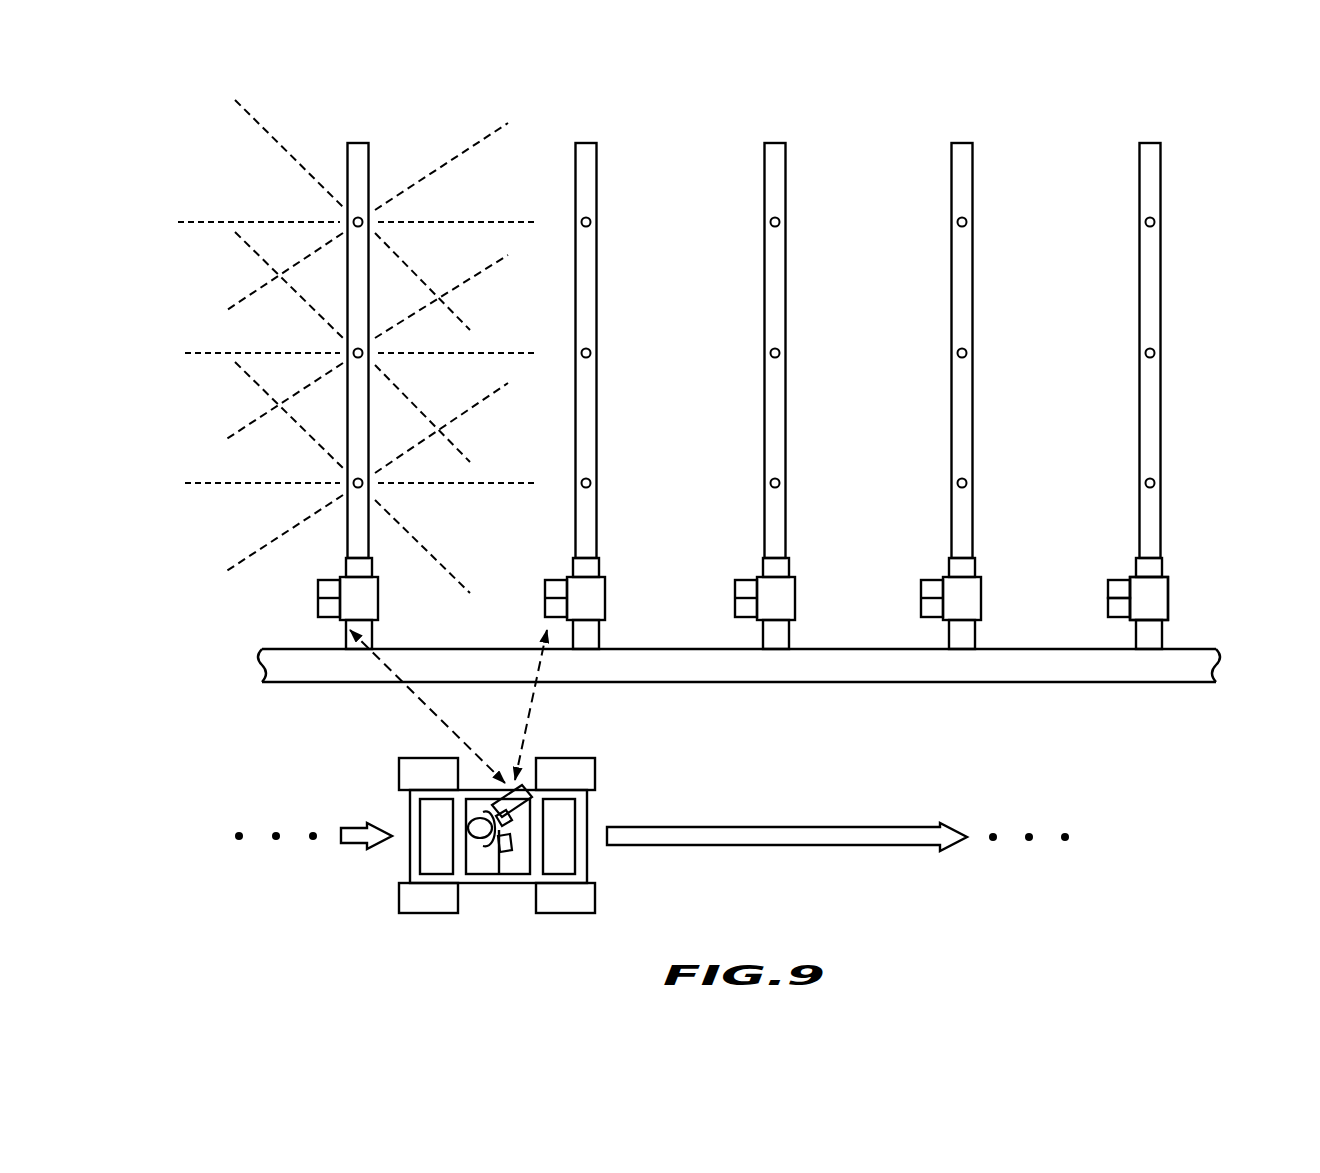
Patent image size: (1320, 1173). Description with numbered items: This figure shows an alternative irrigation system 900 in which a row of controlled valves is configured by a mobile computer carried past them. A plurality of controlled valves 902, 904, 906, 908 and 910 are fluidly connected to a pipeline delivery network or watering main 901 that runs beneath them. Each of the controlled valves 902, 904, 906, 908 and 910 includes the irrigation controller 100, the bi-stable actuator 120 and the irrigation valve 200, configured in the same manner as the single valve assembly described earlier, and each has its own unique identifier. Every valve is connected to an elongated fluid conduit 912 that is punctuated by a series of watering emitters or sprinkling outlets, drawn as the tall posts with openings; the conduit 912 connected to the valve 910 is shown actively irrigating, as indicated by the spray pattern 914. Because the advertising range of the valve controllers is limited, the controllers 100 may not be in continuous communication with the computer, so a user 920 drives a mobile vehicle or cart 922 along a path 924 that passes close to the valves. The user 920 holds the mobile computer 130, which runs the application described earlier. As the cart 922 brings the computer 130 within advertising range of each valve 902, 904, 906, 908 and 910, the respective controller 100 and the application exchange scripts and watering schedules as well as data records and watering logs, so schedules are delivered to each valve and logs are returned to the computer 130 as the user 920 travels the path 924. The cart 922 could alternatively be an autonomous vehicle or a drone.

The irrigation system 900 is at (810, 97).
The elongated fluid conduit 912 is at (369, 162).
The active irrigation indication 914 is at (447, 163).
The controlled valve 910 is at (385, 597).
The controlled valve 908 is at (612, 598).
The controlled valve 906 is at (802, 598).
The controlled valve 904 is at (990, 590).
The controlled valve 902 is at (1148, 600).
The irrigation controller 100 is at (1108, 590).
The bi-stable actuator 120 is at (1108, 607).
The irrigation valve 200 is at (1168, 605).
The watering main 901 is at (828, 676).
The cart 922 is at (587, 810).
The user 920 is at (483, 842).
The mobile computer 130 is at (533, 797).
The path 924 is at (775, 827).